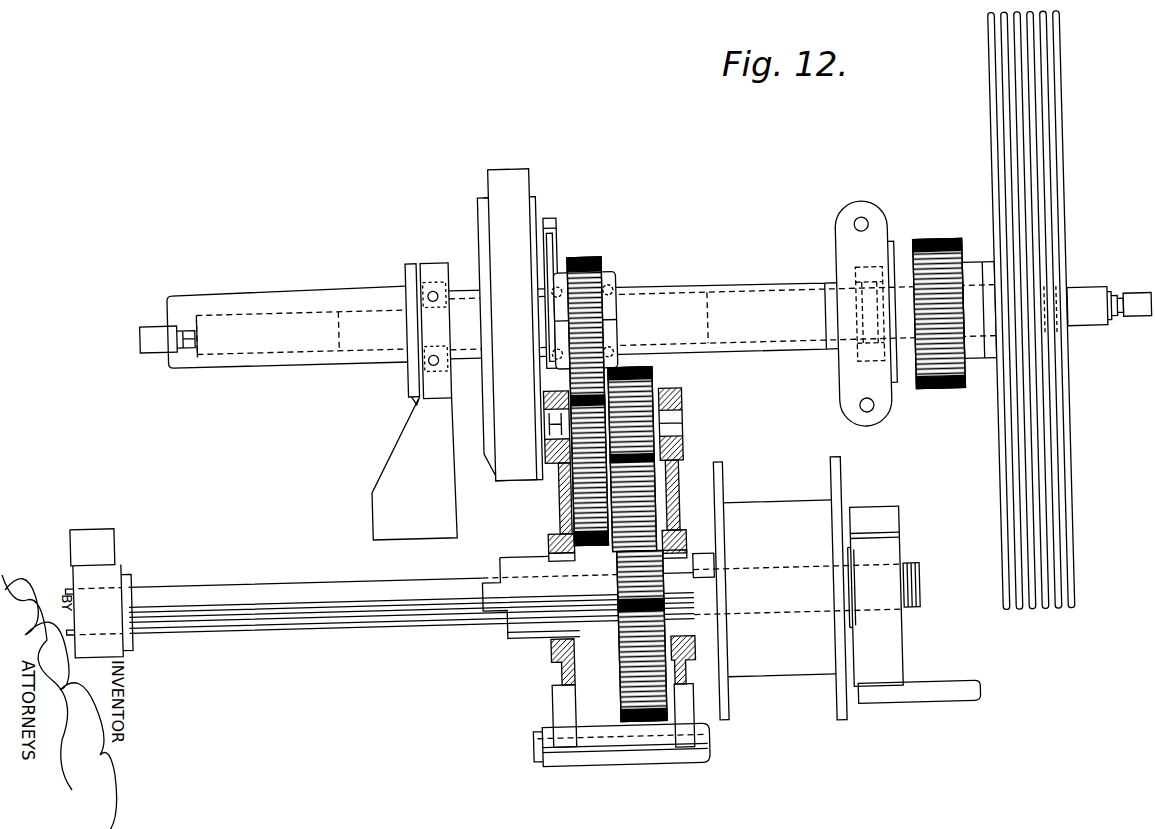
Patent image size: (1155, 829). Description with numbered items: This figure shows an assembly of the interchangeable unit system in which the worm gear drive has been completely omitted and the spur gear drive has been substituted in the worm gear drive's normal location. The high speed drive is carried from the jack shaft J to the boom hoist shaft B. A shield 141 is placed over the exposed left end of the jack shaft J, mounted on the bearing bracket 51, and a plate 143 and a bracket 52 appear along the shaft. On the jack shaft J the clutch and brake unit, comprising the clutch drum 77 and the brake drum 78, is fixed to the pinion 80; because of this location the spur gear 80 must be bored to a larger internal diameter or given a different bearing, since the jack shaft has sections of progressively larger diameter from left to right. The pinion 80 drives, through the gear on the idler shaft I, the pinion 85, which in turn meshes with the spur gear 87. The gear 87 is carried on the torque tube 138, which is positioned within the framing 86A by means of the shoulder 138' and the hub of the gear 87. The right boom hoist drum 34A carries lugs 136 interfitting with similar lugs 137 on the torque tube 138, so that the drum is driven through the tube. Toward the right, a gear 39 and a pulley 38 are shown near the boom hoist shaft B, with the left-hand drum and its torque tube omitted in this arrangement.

The protecting shield 141 is at (333, 268).
The bracket plate 143 is at (408, 260).
The bearing bracket 51 is at (430, 258).
The jack shaft J is at (146, 320).
The clutch drum 77 is at (484, 213).
The brake drum 78 is at (536, 158).
The pinion 80 is at (590, 260).
The pinion 85 is at (659, 376).
The idler shaft I is at (679, 419).
The bracket 52 is at (847, 244).
The gear 39 is at (938, 254).
The pulley 38 is at (1075, 191).
The lugs 136 is at (700, 558).
The lugs 137 is at (704, 586).
The torque tube 138 is at (530, 581).
The shoulder 138' is at (543, 607).
The right boom hoist drum 34A is at (751, 688).
The boom hoist shaft B is at (910, 594).
The framing 86A is at (556, 701).
The spur gear 87 is at (636, 714).